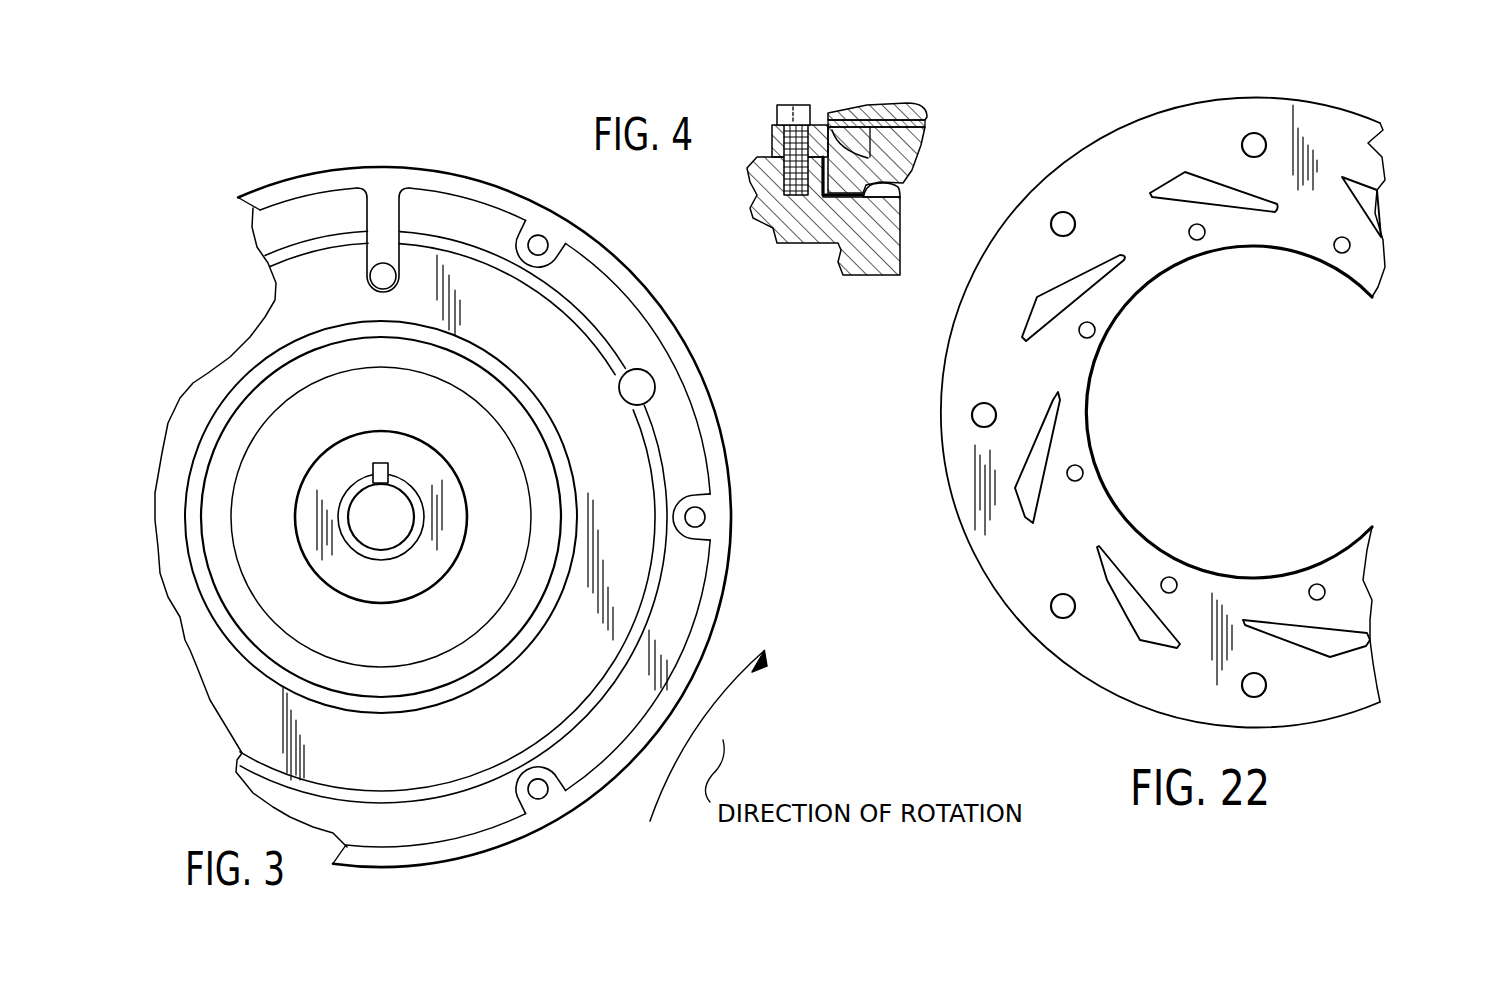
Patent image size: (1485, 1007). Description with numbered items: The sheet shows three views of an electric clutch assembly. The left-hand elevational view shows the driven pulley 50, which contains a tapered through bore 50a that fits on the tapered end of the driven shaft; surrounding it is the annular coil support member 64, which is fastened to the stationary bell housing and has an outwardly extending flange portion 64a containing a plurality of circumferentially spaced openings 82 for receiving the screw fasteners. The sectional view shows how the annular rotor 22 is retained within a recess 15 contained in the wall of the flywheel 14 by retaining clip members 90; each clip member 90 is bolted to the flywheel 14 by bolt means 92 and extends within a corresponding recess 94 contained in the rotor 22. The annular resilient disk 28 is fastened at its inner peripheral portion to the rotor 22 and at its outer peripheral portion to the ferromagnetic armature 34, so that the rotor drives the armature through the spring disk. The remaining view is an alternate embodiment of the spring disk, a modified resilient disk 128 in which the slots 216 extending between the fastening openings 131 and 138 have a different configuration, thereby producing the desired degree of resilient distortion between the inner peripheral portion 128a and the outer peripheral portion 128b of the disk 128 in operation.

In FIG. 4, the flywheel 14 is at (878, 257).
In FIG. 4, the recess 15 is at (886, 183).
In FIG. 4, the annular rotor 22 is at (907, 140).
In FIG. 4, the annular resilient disk 28 is at (912, 102).
In FIG. 4, the ferromagnetic armature 34 is at (860, 106).
In FIG. 3, the driven pulley 50 is at (510, 558).
In FIG. 3, the tapered through bore 50a is at (388, 512).
In FIG. 3, the annular coil support member 64 is at (615, 473).
In FIG. 3, the outwardly extending flange portion 64a is at (681, 433).
In FIG. 3, the circumferentially spaced openings 82 is at (541, 236).
In FIG. 4, the retaining clip members 90 is at (823, 143).
In FIG. 4, the bolt means 92 is at (781, 118).
In FIG. 4, the recesses 94 is at (843, 113).
In FIG. 22, the resilient disk 128 is at (1294, 103).
In FIG. 22, the inner peripheral portion 128a is at (1368, 262).
In FIG. 22, the outer peripheral portion 128b is at (1368, 145).
In FIG. 22, the fastening openings 131 is at (1197, 241).
In FIG. 22, the fastening openings 138 is at (1254, 131).
In FIG. 22, the slots 216 is at (1172, 190).